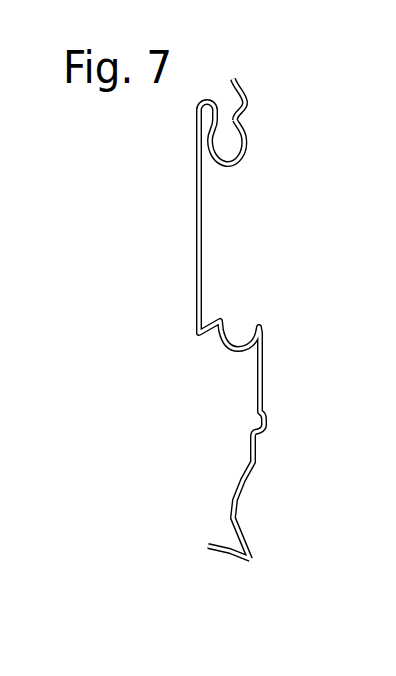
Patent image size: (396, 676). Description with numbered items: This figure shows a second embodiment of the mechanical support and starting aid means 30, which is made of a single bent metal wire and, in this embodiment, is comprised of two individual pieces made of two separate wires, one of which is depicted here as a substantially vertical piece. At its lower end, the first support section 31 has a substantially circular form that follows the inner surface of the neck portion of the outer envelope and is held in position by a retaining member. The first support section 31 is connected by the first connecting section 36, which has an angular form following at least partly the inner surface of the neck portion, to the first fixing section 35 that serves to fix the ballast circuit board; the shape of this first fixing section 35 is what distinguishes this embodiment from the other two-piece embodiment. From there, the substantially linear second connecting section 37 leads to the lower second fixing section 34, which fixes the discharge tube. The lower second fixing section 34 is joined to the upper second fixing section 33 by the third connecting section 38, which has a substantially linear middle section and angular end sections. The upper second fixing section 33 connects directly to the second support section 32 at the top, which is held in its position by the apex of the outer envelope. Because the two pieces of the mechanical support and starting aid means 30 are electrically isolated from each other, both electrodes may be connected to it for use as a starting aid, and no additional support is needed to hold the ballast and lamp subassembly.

The mechanical support and starting aid means 30 is at (153, 245).
The first support section 31 is at (240, 561).
The second support section 32 is at (248, 92).
The upper second fixing section 33 is at (240, 160).
The lower second fixing section 34 is at (233, 350).
The first fixing section 35 is at (264, 424).
The first connecting section 36 is at (243, 481).
The second connecting section 37 is at (263, 375).
The third connecting section 38 is at (201, 238).